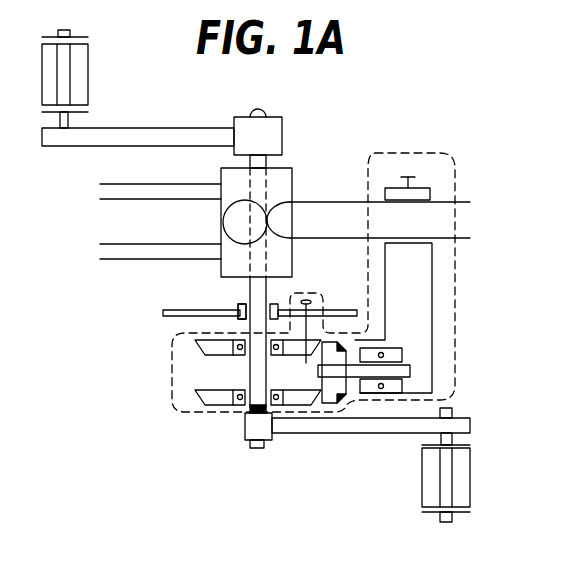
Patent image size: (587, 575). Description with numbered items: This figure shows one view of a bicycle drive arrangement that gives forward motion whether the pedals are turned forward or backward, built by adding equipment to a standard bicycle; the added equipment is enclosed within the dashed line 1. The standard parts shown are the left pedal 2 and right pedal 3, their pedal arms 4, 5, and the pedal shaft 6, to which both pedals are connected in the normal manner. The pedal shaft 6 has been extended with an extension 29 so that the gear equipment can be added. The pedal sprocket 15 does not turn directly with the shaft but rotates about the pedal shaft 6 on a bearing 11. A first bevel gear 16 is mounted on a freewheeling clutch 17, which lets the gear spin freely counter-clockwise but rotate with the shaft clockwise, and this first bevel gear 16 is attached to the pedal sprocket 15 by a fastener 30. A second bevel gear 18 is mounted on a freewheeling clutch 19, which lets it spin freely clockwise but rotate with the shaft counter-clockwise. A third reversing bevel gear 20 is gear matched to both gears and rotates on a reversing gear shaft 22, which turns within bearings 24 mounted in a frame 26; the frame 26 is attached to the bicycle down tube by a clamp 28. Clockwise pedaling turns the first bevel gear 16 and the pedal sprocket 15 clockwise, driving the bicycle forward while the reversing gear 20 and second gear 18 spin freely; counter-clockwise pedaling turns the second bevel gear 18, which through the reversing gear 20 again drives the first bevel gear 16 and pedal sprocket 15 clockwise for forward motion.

The dashed line 1 is at (432, 153).
The left pedal 2 is at (88, 59).
The right pedal 3 is at (487, 440).
The pedal arm 4 is at (157, 128).
The pedal arm 5 is at (384, 434).
The pedal shaft 6 is at (268, 162).
The bearing 11 is at (237, 305).
The pedal sprocket 15 is at (172, 315).
The first bevel gear 16 is at (198, 343).
The freewheeling clutch 17 is at (238, 357).
The second bevel gear 18 is at (199, 396).
The freewheeling clutch 19 is at (240, 407).
The third reversing bevel gear 20 is at (348, 380).
The reversing gear shaft 22 is at (357, 398).
The bearings 24 is at (403, 353).
The frame 26 is at (425, 272).
The clamp 28 is at (427, 180).
The extension 29 is at (248, 292).
The fastener 30 is at (306, 300).